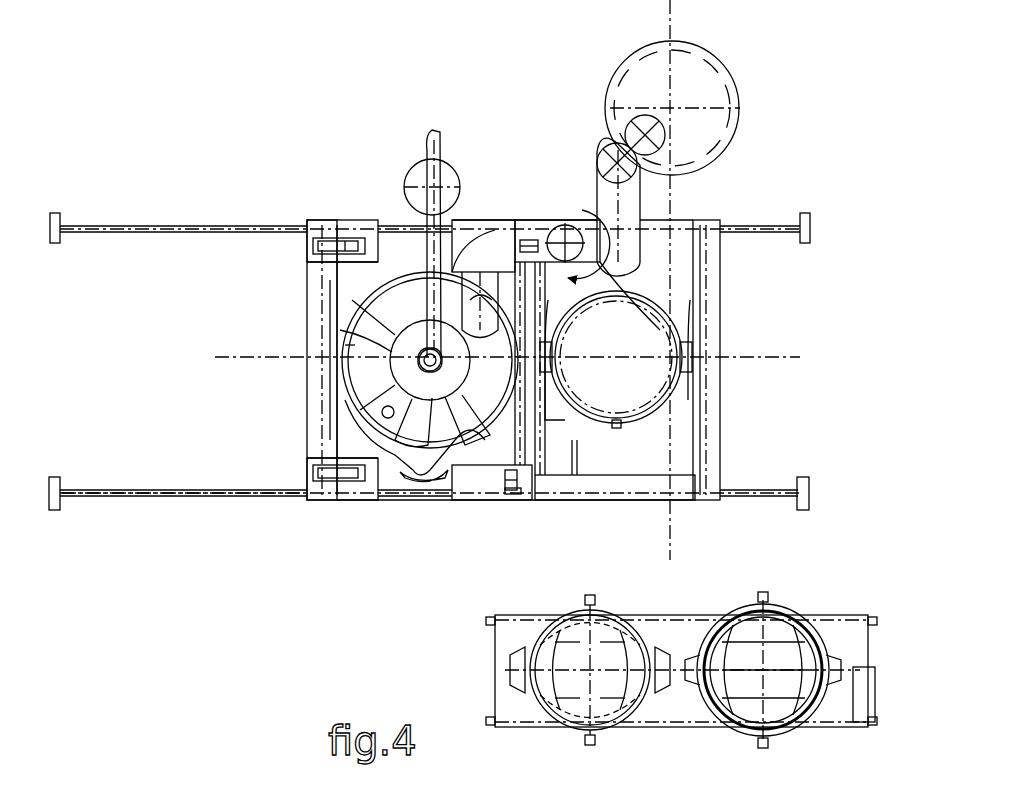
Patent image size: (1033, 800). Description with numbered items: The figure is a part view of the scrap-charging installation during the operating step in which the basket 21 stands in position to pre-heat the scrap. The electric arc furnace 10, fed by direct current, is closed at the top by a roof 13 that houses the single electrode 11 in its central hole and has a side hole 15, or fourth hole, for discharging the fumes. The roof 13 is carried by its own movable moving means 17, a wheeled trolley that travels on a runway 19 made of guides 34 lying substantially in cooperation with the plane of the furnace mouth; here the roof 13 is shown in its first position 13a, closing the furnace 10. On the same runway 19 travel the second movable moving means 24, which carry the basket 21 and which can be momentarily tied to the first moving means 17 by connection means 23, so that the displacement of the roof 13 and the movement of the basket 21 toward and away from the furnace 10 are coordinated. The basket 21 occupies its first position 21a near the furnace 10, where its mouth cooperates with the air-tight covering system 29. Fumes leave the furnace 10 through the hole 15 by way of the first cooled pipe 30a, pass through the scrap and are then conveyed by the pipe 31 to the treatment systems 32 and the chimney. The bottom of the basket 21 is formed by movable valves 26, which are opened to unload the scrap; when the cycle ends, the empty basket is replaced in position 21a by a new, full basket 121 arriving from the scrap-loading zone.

The electric arc furnace 10 is at (402, 458).
The electrode 11 is at (428, 364).
The roof 13 is at (406, 298).
The first position of the roof 13a is at (325, 354).
The hole 15 is at (482, 265).
The movable moving means 17 is at (325, 282).
The runway 19 is at (104, 490).
The basket 21 is at (642, 420).
The first position of the basket 21a is at (676, 410).
The connection means 23 is at (502, 480).
The second movable moving means 24 is at (711, 293).
The movable valves 26 is at (760, 690).
The air-tight covering system 29 is at (644, 346).
The first cooled pipe 30a is at (563, 240).
The pipe 31 is at (628, 205).
The treatment systems 32 is at (697, 100).
The guides 34 is at (212, 226).
The new, full basket 121 is at (722, 612).